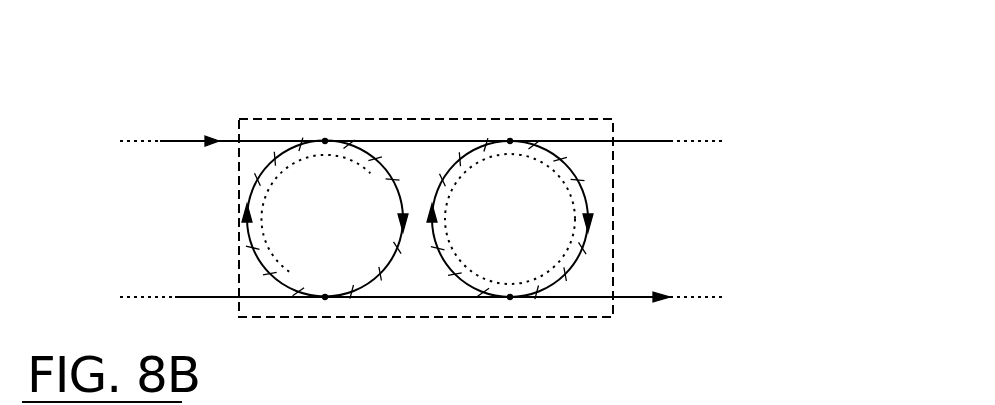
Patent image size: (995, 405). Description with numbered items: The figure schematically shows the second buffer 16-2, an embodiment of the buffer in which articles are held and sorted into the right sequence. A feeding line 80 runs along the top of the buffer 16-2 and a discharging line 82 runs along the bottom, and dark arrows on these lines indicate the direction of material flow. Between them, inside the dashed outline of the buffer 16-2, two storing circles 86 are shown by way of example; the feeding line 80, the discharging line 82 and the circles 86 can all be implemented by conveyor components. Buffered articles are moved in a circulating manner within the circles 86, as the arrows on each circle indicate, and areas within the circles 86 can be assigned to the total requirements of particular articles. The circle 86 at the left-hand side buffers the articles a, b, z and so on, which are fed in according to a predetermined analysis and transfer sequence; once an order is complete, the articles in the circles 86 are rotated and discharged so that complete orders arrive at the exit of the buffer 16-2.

The second buffer 16-2 is at (586, 118).
The feeding line 80 is at (226, 139).
The discharging line 82 is at (632, 299).
The storing circle 86 is at (238, 254).